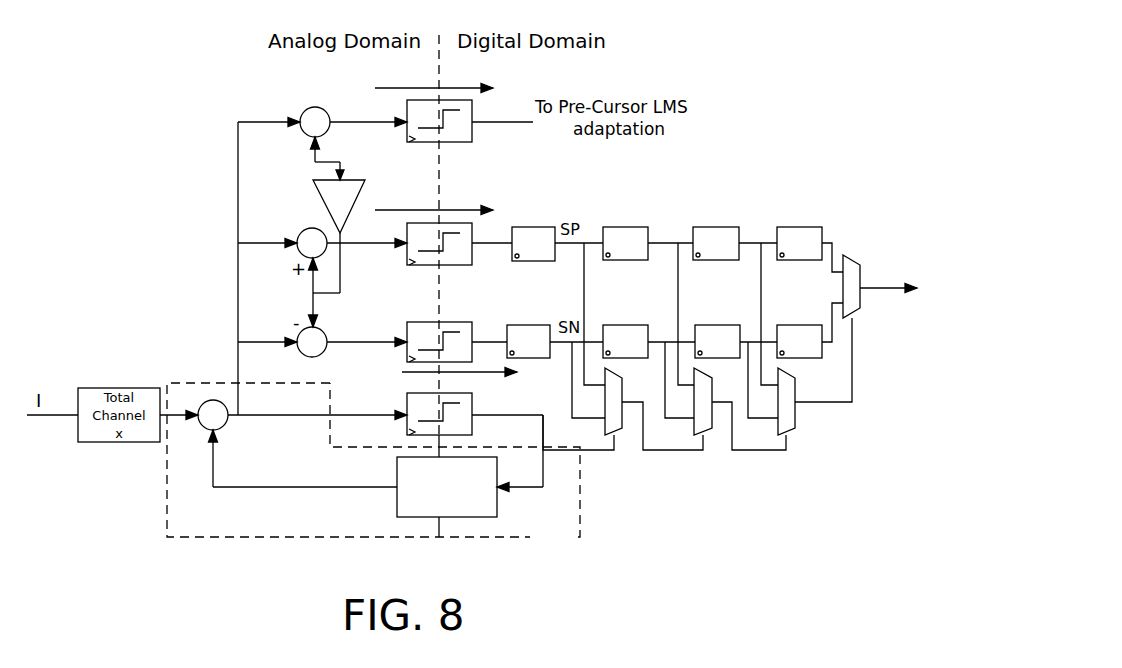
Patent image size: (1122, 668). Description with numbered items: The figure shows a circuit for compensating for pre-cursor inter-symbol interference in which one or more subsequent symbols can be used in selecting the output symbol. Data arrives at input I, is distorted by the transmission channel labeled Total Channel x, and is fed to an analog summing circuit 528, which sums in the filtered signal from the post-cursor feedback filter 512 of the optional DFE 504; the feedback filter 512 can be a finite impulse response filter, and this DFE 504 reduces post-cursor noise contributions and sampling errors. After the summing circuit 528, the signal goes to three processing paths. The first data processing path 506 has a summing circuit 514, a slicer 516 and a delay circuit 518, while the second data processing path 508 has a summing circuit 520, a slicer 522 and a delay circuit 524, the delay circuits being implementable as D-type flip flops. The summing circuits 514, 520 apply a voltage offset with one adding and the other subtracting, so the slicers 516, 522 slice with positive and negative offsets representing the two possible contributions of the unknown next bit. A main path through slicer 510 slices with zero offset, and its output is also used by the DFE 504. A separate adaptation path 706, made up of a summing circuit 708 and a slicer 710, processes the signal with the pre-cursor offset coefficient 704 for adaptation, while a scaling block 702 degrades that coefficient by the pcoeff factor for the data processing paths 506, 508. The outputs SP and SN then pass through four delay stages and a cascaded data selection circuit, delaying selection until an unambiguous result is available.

The DFE 504 is at (578, 508).
The first data processing path 506 is at (453, 199).
The second data processing path 508 is at (490, 378).
The slicer 510 is at (410, 403).
The post-cursor feedback filter 512 is at (497, 512).
The summing circuit 514 is at (305, 230).
The slicer 516 is at (455, 264).
The delay circuit 518 is at (530, 258).
The summing circuit 520 is at (325, 355).
The slicer 522 is at (425, 322).
The delay circuit 524 is at (530, 333).
The summing circuit 528 is at (225, 426).
The scaling block 702 is at (338, 205).
The pre-cursor offset coefficient 704 is at (426, 165).
The adaptation path 706 is at (453, 77).
The summing circuit 708 is at (305, 108).
The slicer 710 is at (472, 130).